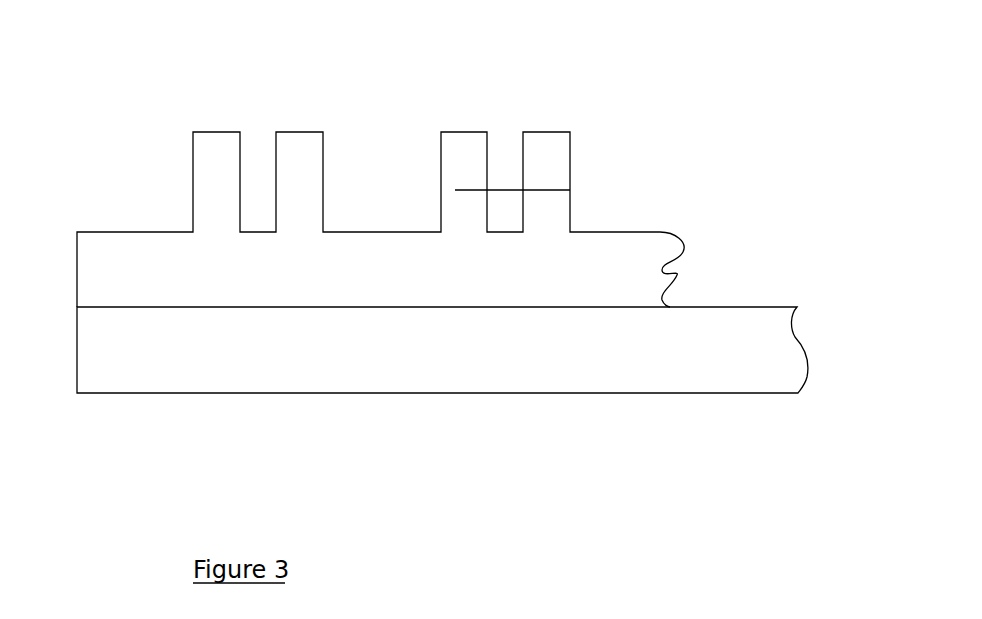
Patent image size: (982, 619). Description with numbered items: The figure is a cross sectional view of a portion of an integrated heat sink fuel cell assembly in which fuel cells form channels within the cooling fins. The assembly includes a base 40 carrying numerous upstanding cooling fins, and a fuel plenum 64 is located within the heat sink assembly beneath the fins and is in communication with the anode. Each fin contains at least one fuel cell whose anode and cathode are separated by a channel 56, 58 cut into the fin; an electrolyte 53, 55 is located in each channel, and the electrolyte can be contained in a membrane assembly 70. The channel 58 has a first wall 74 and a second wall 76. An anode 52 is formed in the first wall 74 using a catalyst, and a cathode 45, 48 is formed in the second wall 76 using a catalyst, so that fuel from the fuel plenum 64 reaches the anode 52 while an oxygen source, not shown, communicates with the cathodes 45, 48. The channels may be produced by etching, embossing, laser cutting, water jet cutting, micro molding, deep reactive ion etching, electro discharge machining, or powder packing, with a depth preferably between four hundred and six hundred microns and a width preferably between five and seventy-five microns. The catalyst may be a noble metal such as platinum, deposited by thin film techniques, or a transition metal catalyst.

The substrate 40 is at (740, 373).
The fuel plenum 64 is at (360, 280).
The membrane assembly 70 is at (77, 264).
The cathode 45 is at (212, 131).
The cathode 48 is at (458, 140).
The anode 52 is at (546, 180).
The electrolyte 53 is at (253, 218).
The channel 56 is at (255, 137).
The channel 58 is at (487, 157).
The first wall 74 is at (523, 167).
The second wall 76 is at (455, 190).
The electrolyte 55 is at (570, 190).